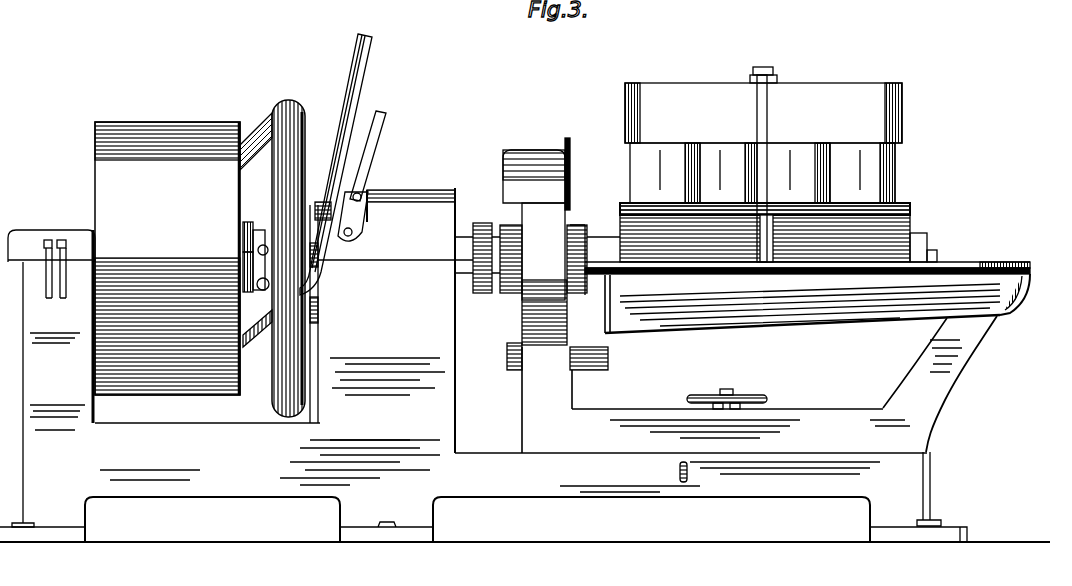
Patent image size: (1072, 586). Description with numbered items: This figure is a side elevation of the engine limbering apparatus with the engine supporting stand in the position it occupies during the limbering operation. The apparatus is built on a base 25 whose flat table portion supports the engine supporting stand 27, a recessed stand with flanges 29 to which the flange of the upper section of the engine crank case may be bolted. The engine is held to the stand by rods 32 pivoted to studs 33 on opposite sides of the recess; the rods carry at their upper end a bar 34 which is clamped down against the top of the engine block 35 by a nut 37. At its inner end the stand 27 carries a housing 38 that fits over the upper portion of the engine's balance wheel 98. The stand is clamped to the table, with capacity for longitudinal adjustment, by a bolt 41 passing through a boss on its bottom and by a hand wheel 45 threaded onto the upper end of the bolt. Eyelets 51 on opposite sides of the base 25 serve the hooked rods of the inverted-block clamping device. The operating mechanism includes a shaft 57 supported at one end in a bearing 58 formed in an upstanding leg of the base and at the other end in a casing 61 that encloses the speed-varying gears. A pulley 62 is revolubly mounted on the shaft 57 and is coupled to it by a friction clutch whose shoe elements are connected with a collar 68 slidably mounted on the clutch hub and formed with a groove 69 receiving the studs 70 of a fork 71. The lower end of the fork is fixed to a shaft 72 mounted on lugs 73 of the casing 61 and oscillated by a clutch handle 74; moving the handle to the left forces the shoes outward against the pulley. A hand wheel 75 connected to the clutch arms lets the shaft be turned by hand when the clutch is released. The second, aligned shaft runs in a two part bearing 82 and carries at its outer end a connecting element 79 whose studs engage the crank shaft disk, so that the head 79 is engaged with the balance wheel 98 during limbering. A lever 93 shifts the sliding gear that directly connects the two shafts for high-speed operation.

The base 25 is at (262, 497).
The engine supporting stand 27 is at (978, 362).
The flanges 29 is at (1005, 268).
The rods 32 is at (767, 117).
The studs 33 is at (772, 251).
The bar 34 is at (779, 79).
The engine block 35 is at (895, 165).
The nut 37 is at (767, 67).
The housing 38 is at (520, 150).
The bolt 41 is at (730, 389).
The hand wheel 45 is at (750, 396).
The eyelets 51 is at (688, 472).
The shaft 57 is at (12, 232).
The bearing 58 is at (60, 232).
The casing 61 is at (455, 342).
The pulley 62 is at (158, 122).
The collar 68 is at (243, 230).
The groove 69 is at (253, 248).
The studs 70 is at (258, 268).
The fork 71 is at (242, 290).
The shaft 72 is at (268, 324).
The lugs 73 is at (318, 310).
The clutch handle 74 is at (372, 42).
The hand wheel 75 is at (287, 98).
The connecting element 79 is at (512, 276).
The two part bearing 82 is at (502, 236).
The lever 93 is at (380, 110).
The balance wheel 98 is at (506, 292).